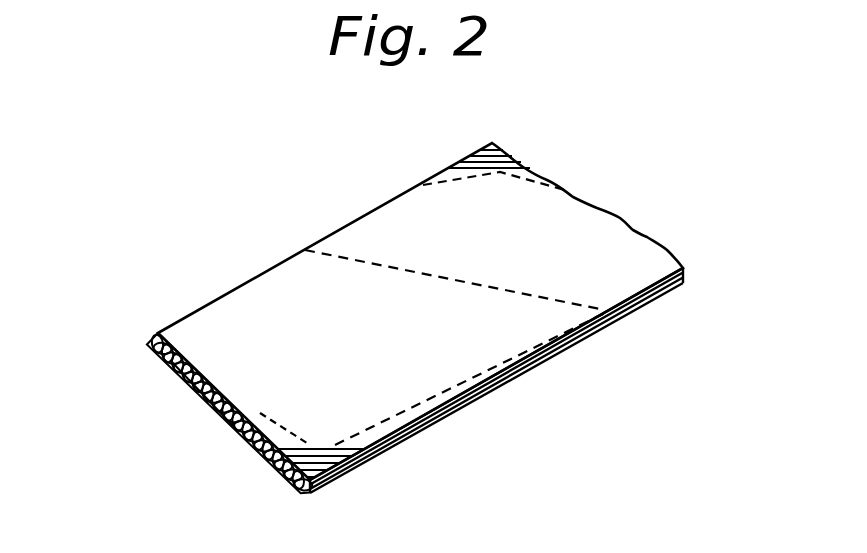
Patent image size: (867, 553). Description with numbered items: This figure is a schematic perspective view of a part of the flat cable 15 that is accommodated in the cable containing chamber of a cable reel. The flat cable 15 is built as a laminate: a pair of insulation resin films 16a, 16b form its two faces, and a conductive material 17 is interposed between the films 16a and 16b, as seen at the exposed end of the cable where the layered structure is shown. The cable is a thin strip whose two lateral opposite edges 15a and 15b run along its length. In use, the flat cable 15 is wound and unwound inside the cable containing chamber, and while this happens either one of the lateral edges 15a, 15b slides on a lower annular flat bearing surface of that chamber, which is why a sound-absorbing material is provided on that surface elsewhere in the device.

The flat cable 15 is at (293, 134).
The lateral edge 15a is at (422, 185).
The lateral edge 15b is at (545, 367).
The insulation resin film 16a is at (178, 350).
The insulation resin film 16b is at (172, 368).
The conductive material 17 is at (156, 352).